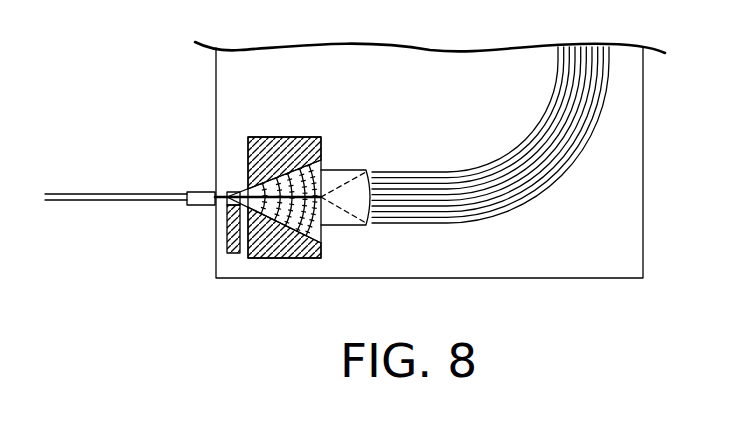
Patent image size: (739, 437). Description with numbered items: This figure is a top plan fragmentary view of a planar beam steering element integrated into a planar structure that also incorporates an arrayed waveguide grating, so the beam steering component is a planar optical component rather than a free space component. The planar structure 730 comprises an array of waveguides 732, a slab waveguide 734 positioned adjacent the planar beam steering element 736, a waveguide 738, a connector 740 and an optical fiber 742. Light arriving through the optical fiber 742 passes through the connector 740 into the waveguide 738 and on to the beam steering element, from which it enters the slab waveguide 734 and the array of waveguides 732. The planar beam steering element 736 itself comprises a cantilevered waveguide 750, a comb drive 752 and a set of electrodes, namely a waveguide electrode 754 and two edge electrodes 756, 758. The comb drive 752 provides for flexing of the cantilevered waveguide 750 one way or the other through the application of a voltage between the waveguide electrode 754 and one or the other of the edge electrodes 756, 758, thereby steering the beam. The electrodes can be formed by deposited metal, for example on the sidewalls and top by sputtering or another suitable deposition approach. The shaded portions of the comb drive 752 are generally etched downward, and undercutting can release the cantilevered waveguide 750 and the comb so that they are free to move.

The planar structure 730 is at (216, 110).
The array of waveguides 732 is at (483, 165).
The slab waveguide 734 is at (355, 226).
The planar beam steering element 736 is at (278, 94).
The waveguide 738 is at (226, 192).
The connector 740 is at (202, 207).
The optical fiber 742 is at (102, 203).
The cantilevered waveguide 750 is at (295, 205).
The comb drive 752 is at (326, 162).
The waveguide electrode 754 is at (232, 256).
The edge electrode 756 is at (299, 259).
The edge electrode 758 is at (289, 137).